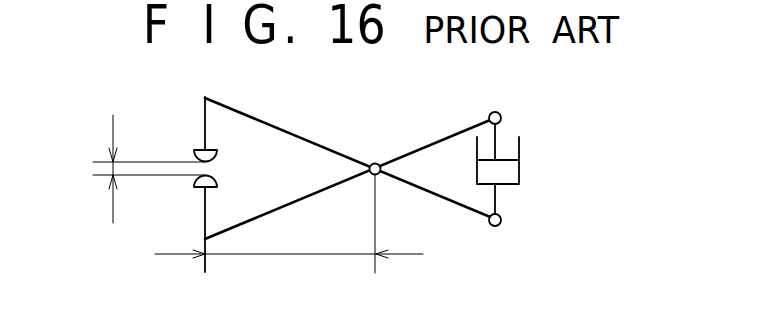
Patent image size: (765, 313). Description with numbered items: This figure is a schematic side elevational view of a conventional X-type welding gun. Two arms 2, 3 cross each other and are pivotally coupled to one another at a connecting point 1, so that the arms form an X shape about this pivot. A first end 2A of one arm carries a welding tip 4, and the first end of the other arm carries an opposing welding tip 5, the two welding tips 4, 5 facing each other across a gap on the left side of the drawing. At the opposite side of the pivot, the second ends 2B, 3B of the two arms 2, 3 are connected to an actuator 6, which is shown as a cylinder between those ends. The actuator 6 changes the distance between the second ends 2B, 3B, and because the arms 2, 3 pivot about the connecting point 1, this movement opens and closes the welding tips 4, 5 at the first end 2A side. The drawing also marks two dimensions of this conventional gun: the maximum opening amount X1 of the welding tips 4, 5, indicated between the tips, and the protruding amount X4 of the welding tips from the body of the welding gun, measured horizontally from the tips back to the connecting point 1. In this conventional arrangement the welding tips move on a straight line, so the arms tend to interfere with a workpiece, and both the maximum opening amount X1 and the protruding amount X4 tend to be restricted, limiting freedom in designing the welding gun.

The connecting point 1 is at (377, 163).
The arm 2 is at (296, 131).
The arm 3 is at (291, 203).
The first end of arm 2A is at (205, 97).
The second end of arm 2B is at (490, 228).
The second end of arm 3B is at (205, 239).
The welding tip 4 is at (195, 157).
The welding tip 5 is at (196, 183).
The actuator 6 is at (519, 167).
The maximum opening amount of the welding tips X1 is at (113, 168).
The protruding amount of the welding tips X4 is at (262, 256).